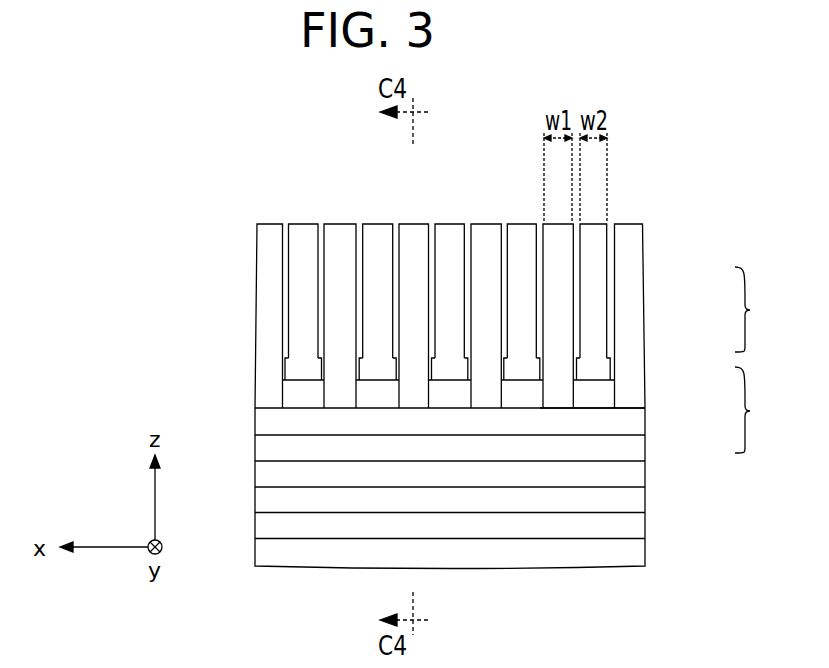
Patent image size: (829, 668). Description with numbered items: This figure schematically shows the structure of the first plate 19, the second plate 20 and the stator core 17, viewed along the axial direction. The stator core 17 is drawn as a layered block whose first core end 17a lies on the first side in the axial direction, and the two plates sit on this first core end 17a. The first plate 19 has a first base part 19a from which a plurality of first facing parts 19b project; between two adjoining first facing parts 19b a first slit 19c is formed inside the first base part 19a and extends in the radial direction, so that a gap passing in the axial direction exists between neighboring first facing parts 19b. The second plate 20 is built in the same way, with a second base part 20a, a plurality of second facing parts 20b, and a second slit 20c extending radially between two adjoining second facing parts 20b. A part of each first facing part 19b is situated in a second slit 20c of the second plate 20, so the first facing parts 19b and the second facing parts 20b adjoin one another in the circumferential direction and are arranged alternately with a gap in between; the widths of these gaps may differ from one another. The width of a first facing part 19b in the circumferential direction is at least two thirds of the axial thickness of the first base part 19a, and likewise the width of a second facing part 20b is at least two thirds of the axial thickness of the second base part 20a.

The stator core 17 is at (647, 496).
The first core end 17a is at (272, 408).
The first plate 19 is at (761, 410).
The first base part 19a is at (603, 390).
The first facing part 19b is at (268, 275).
The first slit 19c is at (597, 399).
The second plate 20 is at (761, 309).
The second base part 20a is at (610, 364).
The second facing part 20b is at (305, 243).
The second slit 20c is at (612, 374).